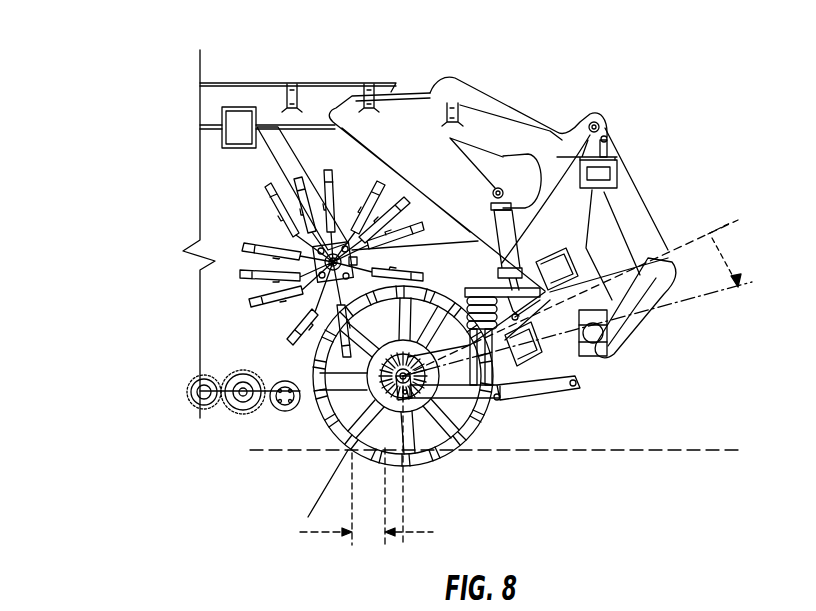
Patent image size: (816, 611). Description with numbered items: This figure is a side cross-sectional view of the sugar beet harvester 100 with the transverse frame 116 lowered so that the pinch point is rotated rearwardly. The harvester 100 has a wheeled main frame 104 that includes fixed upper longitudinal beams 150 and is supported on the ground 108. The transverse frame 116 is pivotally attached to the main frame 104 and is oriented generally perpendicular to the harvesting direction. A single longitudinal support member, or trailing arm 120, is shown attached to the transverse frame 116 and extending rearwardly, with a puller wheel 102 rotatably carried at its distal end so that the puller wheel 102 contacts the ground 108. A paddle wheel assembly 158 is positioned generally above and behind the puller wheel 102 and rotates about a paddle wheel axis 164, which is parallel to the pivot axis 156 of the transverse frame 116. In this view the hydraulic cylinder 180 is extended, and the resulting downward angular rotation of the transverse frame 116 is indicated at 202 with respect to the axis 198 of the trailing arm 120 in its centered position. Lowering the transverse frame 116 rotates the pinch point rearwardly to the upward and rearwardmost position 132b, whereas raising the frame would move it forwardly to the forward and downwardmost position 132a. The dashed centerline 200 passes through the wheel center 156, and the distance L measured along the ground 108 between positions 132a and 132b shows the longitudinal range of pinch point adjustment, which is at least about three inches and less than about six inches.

The sugar beet harvester 100 is at (147, 259).
The puller wheel 102 is at (476, 429).
The main frame 104 is at (281, 35).
The ground 108 is at (636, 450).
The transverse frame 116 is at (525, 358).
The longitudinal support member 120 is at (440, 291).
The forward and downwardmost pinch point position 132a is at (388, 474).
The upward and rearwardmost pinch point position 132b is at (348, 450).
The upper longitudinal beam 150 is at (315, 83).
The pivot axis of the transverse frame 156 is at (487, 402).
The paddle wheel assembly 158 is at (293, 159).
The paddle wheel axis 164 is at (295, 247).
The hydraulic cylinder 180 is at (597, 146).
The axis of the trailing arm 198 is at (728, 225).
The centerline of the puller wheel 200 is at (403, 497).
The downward angular rotation of the transverse frame 202 is at (708, 297).